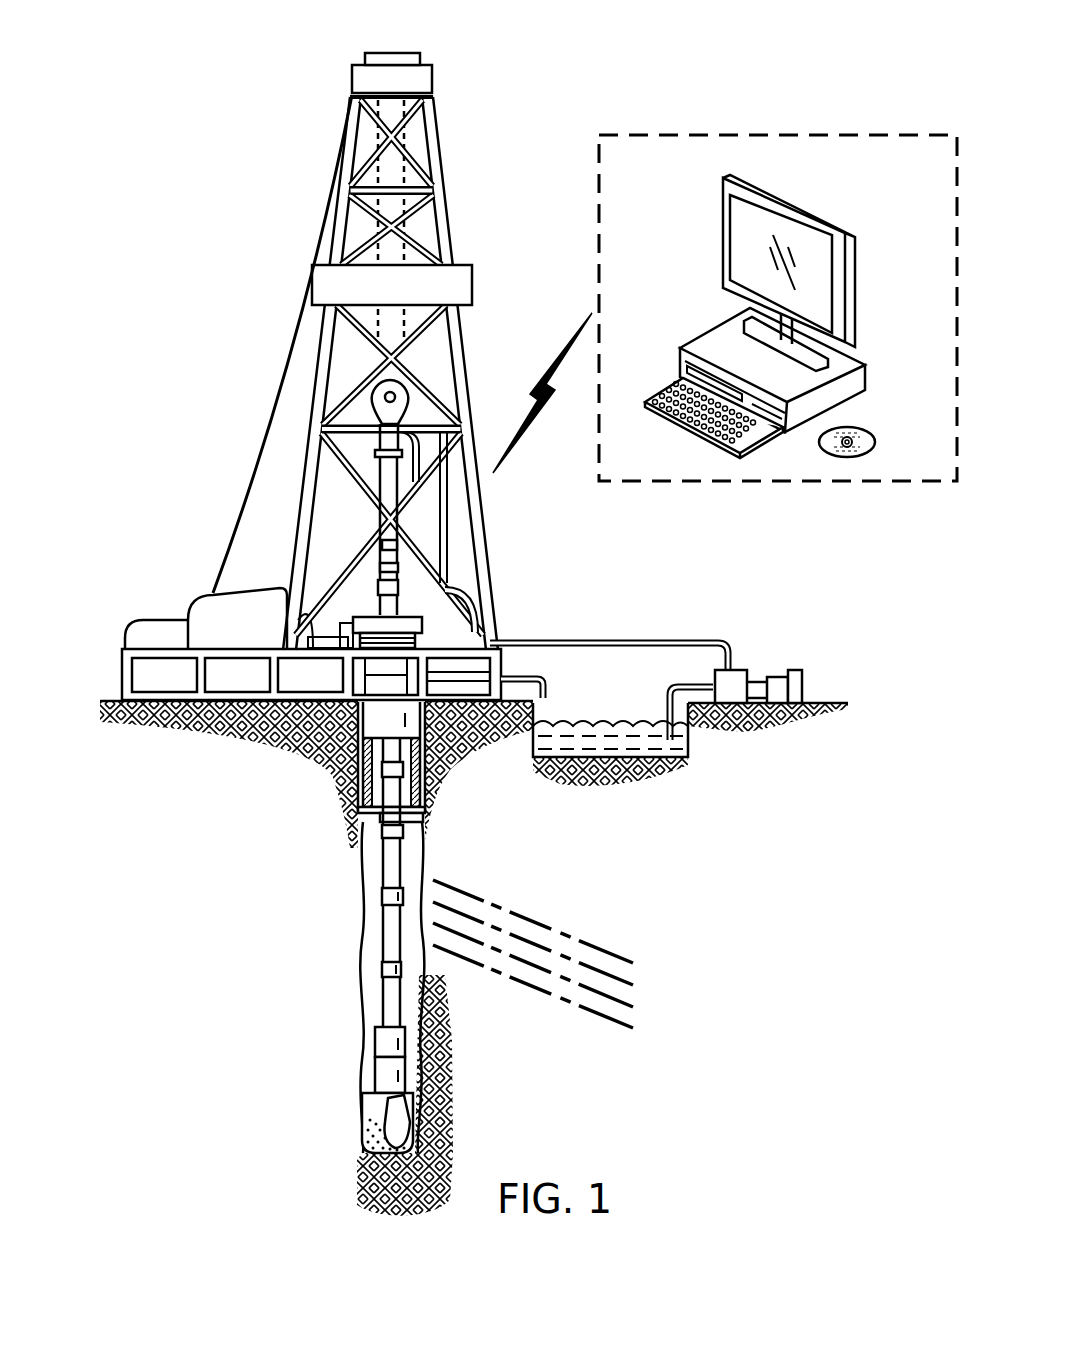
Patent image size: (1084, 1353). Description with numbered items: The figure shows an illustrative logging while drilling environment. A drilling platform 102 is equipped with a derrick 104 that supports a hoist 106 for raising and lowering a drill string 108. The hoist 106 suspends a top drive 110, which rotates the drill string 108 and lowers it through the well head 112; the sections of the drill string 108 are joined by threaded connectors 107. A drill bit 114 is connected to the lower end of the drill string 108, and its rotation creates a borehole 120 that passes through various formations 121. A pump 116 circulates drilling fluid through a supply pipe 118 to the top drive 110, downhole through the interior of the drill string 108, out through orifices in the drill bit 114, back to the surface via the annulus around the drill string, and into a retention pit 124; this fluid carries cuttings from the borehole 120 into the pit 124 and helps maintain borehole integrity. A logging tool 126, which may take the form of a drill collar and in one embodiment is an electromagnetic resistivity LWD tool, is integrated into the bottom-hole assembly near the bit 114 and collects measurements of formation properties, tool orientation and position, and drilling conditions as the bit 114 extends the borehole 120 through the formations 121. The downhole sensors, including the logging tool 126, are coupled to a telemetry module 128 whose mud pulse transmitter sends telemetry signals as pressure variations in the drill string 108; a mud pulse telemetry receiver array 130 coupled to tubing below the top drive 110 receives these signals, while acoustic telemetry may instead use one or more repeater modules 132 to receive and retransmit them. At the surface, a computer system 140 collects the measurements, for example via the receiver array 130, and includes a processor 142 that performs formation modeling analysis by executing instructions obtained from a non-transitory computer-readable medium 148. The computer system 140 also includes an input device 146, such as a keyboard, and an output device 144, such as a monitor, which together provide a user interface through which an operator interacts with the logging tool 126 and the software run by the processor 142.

The drilling platform 102 is at (122, 673).
The derrick 104 is at (449, 225).
The hoist 106 is at (407, 410).
The threaded connectors 107 is at (382, 968).
The drill string 108 is at (407, 867).
The top drive 110 is at (390, 470).
The well head 112 is at (412, 615).
The drill bit 114 is at (362, 1130).
The pump 116 is at (780, 673).
The supply pipe 118 is at (618, 640).
The borehole 120 is at (368, 887).
The formations 121 is at (647, 957).
The retention pit 124 is at (610, 733).
The logging tool 126 is at (378, 1077).
The telemetry module 128 is at (378, 1045).
The mud pulse telemetry receiver array 130 is at (398, 542).
The repeater modules 132 is at (382, 897).
The computer system 140 is at (865, 134).
The processor 142 is at (720, 343).
The output device 144 is at (797, 198).
The input device 146 is at (665, 387).
The non-transitory computer-readable medium 148 is at (875, 442).